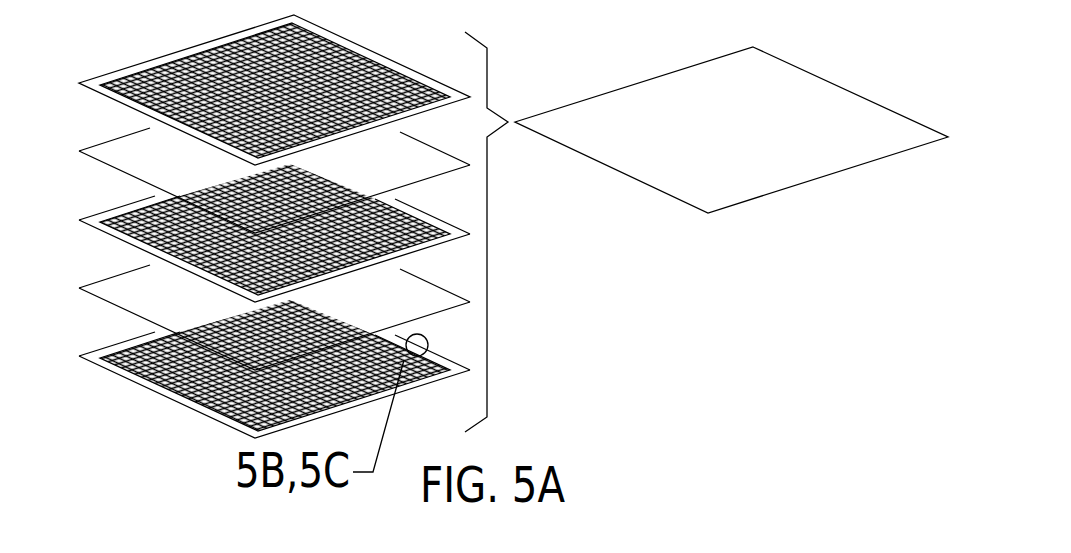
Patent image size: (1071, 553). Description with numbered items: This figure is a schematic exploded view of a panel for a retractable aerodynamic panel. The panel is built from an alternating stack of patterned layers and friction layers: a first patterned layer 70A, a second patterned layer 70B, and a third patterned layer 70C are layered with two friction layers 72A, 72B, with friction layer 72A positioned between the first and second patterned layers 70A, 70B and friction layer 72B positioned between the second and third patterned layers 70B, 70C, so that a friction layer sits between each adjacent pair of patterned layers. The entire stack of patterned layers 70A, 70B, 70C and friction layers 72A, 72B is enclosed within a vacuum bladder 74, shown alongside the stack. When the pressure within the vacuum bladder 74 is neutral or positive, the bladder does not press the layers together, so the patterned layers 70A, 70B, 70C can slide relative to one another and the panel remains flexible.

The first patterned layer 70A is at (108, 98).
The friction layer 72A is at (108, 166).
The second patterned layer 70B is at (108, 235).
The friction layer 72B is at (108, 303).
The third patterned layer 70C is at (108, 371).
The vacuum bladder 74 is at (828, 175).